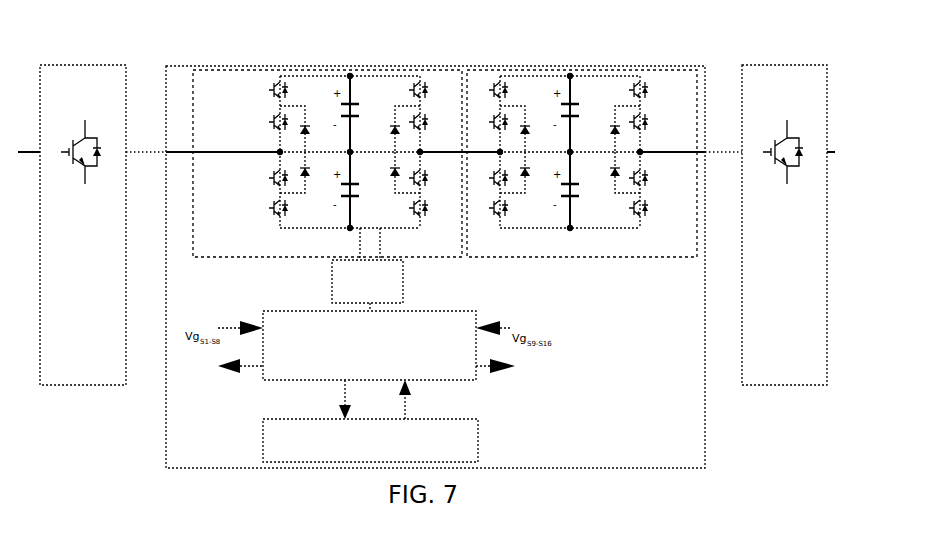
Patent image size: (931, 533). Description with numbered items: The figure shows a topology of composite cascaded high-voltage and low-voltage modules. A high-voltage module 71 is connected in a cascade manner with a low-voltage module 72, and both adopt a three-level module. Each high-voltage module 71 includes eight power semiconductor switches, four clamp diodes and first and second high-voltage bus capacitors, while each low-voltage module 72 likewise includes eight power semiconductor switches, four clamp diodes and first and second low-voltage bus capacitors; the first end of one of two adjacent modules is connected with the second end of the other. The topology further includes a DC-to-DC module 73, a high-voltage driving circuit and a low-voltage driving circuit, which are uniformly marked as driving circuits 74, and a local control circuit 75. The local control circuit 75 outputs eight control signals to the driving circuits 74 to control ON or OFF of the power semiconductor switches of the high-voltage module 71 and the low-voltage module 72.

The high-voltage module 71 is at (585, 66).
The low-voltage module 72 is at (305, 66).
The DC-to-DC module 73 is at (403, 278).
The high-voltage driving circuit and low-voltage driving circuit 74 is at (465, 311).
The local control circuit 75 is at (478, 440).